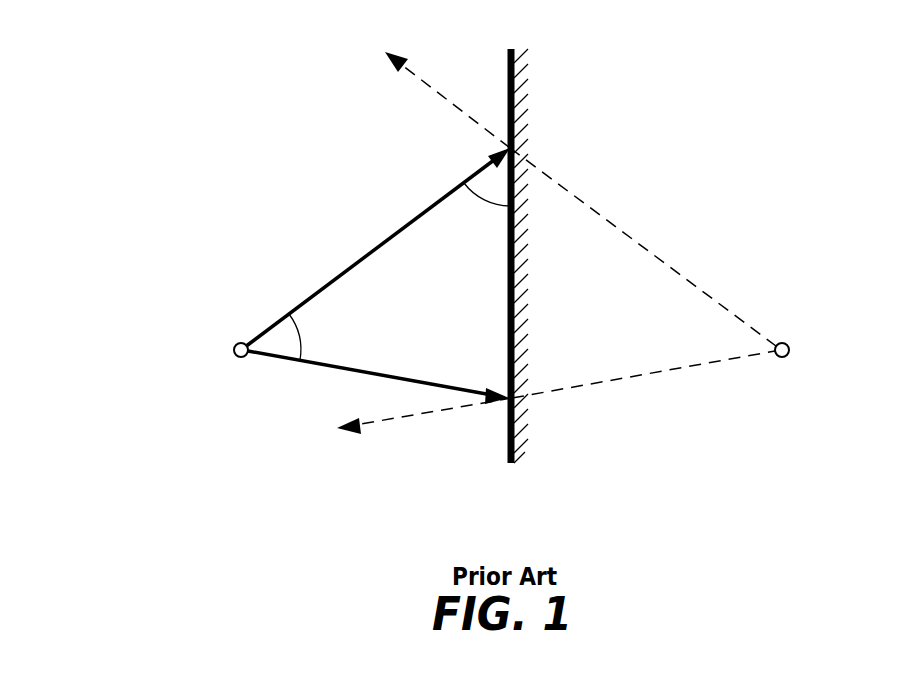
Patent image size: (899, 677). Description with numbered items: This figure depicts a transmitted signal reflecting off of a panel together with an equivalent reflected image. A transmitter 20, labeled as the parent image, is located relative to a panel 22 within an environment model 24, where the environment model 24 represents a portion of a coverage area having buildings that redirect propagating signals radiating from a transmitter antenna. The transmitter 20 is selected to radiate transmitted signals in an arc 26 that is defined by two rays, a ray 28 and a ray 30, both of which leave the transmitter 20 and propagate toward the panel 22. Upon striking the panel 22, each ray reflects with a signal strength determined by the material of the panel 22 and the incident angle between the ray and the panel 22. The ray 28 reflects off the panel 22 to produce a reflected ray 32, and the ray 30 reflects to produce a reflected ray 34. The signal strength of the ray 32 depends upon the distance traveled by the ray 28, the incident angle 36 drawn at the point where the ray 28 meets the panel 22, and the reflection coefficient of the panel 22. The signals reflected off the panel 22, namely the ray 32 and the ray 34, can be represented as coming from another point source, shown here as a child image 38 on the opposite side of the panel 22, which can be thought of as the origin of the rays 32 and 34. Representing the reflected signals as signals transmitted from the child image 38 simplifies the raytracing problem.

The transmitter 20 is at (240, 357).
The panel 22 is at (508, 73).
The environment model 24 is at (688, 72).
The arc 26 is at (300, 341).
The ray 28 is at (362, 257).
The ray 30 is at (358, 373).
The ray 32 is at (452, 105).
The ray 34 is at (382, 421).
The incident angle 36 is at (490, 203).
The child image 38 is at (787, 345).